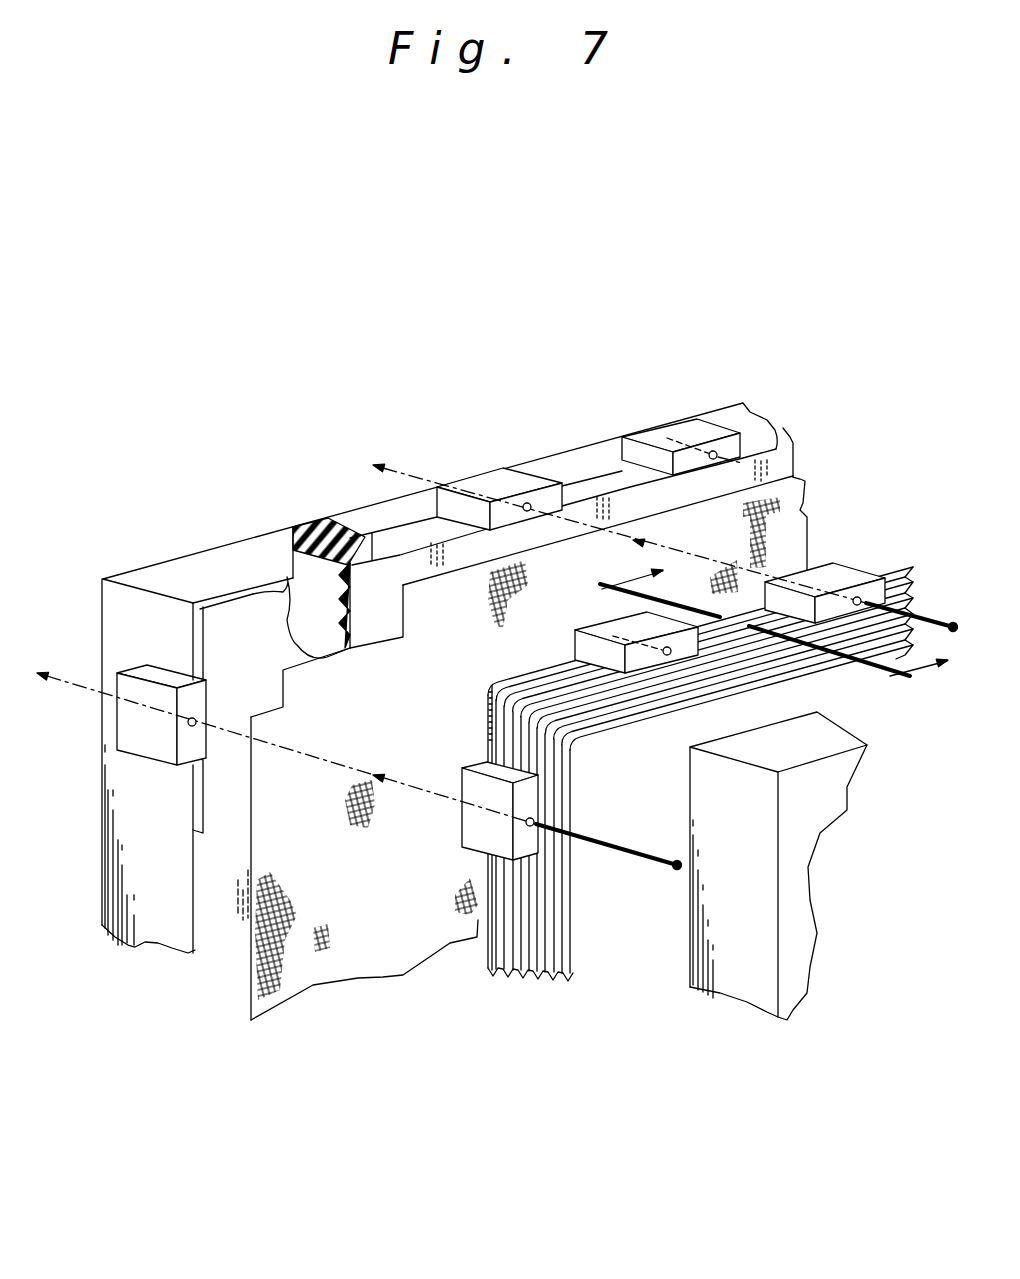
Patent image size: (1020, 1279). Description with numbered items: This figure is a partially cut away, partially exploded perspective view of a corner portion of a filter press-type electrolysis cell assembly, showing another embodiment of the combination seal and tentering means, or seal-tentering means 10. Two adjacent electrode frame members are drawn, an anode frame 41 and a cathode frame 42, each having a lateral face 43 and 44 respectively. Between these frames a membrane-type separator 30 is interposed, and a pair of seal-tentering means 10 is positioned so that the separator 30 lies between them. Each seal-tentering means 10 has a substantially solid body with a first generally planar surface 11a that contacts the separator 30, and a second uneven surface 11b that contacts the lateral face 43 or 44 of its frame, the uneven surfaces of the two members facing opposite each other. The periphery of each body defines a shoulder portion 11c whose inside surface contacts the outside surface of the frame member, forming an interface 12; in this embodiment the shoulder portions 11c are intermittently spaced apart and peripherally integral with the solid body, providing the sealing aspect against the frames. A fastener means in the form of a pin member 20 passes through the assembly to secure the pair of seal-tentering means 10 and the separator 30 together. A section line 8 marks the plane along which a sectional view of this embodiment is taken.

The section line 8- 8 is at (758, 639).
The seal-tentering means 10 is at (901, 498).
The first generally planar surface 11a is at (207, 793).
The second uneven surface 11b is at (289, 557).
The shoulder portion 11c is at (287, 593).
The interface 12 is at (320, 553).
The pin member 20 is at (637, 858).
The separator 30 is at (383, 977).
The anode frame 41 is at (197, 567).
The cathode frame 42 is at (800, 755).
The lateral face 43 is at (279, 587).
The lateral face 44 is at (687, 940).